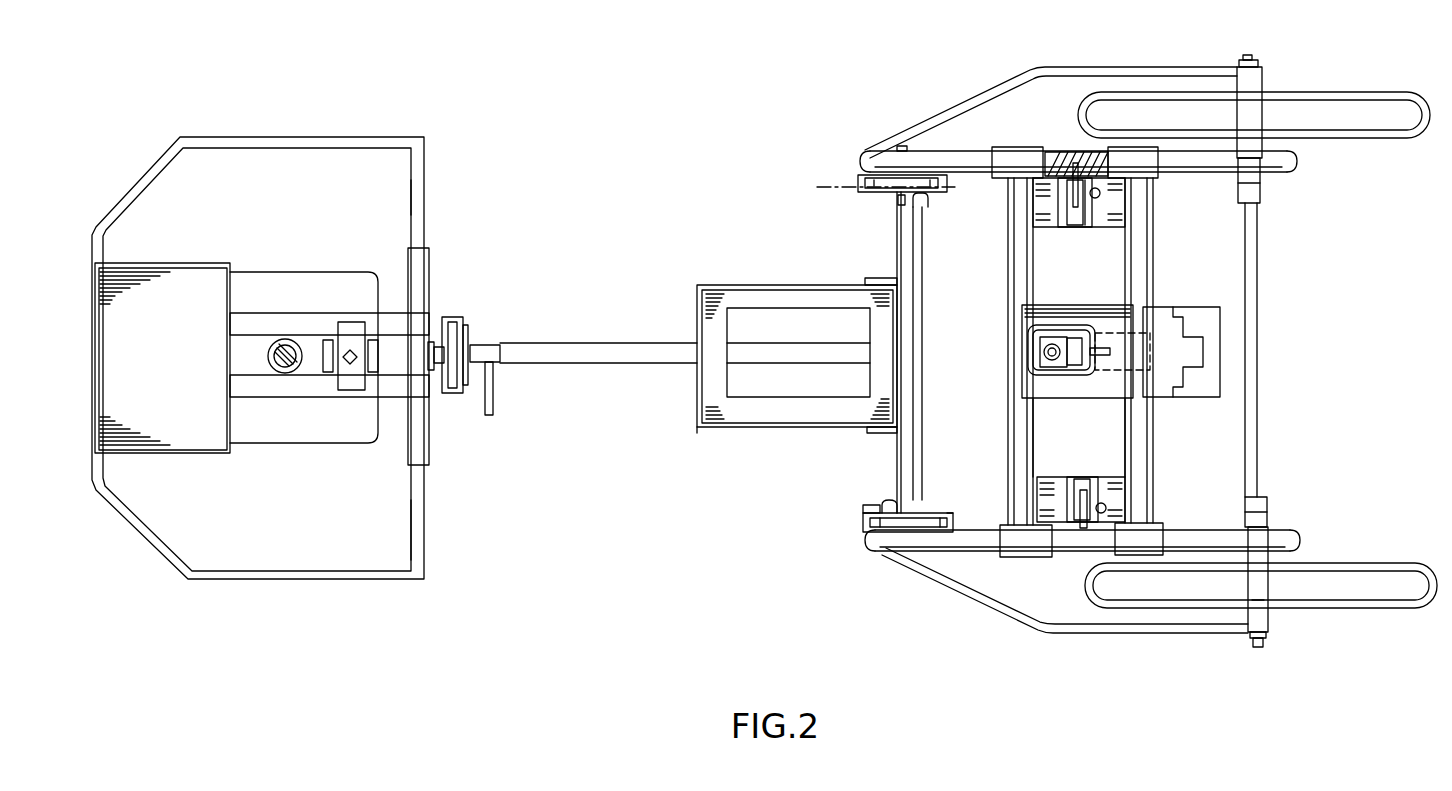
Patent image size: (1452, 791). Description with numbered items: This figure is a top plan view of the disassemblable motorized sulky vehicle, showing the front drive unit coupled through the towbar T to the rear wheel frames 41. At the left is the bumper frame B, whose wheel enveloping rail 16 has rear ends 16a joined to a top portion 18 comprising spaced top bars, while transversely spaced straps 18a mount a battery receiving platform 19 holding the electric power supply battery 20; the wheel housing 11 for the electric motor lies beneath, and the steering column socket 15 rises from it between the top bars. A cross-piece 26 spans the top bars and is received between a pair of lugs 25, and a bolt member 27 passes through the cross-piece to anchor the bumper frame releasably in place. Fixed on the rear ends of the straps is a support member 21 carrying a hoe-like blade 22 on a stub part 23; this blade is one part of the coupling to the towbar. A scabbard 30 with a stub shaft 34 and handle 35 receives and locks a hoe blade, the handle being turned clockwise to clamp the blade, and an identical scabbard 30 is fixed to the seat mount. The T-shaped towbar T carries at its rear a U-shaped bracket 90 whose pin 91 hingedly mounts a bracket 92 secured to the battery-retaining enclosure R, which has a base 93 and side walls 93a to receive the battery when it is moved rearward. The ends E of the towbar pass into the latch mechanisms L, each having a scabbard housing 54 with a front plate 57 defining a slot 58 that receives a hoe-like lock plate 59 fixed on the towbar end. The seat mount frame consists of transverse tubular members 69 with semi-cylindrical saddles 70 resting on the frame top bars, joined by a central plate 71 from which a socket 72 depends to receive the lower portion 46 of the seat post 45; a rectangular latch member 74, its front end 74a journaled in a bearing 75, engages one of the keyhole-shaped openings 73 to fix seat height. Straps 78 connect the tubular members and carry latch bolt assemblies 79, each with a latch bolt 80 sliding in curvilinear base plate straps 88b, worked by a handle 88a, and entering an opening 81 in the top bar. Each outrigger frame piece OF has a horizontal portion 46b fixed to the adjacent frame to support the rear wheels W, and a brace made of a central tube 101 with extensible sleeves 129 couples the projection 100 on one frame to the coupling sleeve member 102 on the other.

The bumper frame B is at (292, 128).
The wheel housing 11 is at (310, 437).
The steering column socket 15 is at (275, 340).
The wheel enveloping rail 16 is at (345, 580).
The rear ends of rail 16a is at (424, 203).
The top portion 18 is at (430, 255).
The straps 18a is at (250, 386).
The battery receiving platform 19 is at (166, 263).
The electric power supply battery 20 is at (256, 324).
The support member 21 is at (444, 345).
The hoe-like blade 22 is at (468, 383).
The stub part 23 is at (440, 350).
The lugs 25 is at (327, 345).
The cross-piece 26 is at (338, 380).
The bolt member 27 is at (355, 367).
The scabbard 30 is at (447, 395).
The stub shaft 34 is at (487, 352).
The handle 35 is at (497, 387).
The towbar T is at (628, 342).
The battery-retaining enclosure R is at (793, 283).
The U-shaped bracket 90 is at (893, 305).
The pin 91 is at (893, 437).
The bracket 92 is at (877, 278).
The base 93 is at (720, 300).
The side walls 93a is at (713, 427).
The ends of towbar E is at (916, 246).
The latch mechanism L is at (853, 530).
The outrigger frame piece OF is at (1027, 627).
The scabbard housing 54 is at (957, 520).
The front plate 57 is at (947, 513).
The slot 58 is at (932, 528).
The lock plate 59 is at (883, 190).
The tubular members 69 is at (1133, 435).
The saddles 70 is at (1038, 550).
The central plate 71 is at (1064, 308).
The socket 72 is at (1118, 372).
The keyhole-shaped openings 73 is at (1102, 348).
The latch member 74 is at (1088, 308).
The front end of latch member 74a is at (1032, 378).
The bearing 75 is at (1030, 345).
The post 45 is at (1040, 355).
The lower portion of post 46 is at (1073, 367).
The horizontal portion 46b is at (1260, 602).
The straps 78 is at (1103, 217).
The latch bolt assembly 79 is at (1062, 210).
The latch bolt 80 is at (1077, 160).
The opening 81 is at (1043, 160).
The handle 88a is at (1083, 203).
The base plate straps 88b is at (1060, 197).
The projection 100 is at (1267, 515).
The central tube 101 is at (1263, 380).
The coupling sleeve member 102 is at (1263, 178).
The extensible sleeve 129 is at (1258, 197).
The rear wheels W is at (1257, 379).
The rear wheel frames 41 is at (1357, 615).